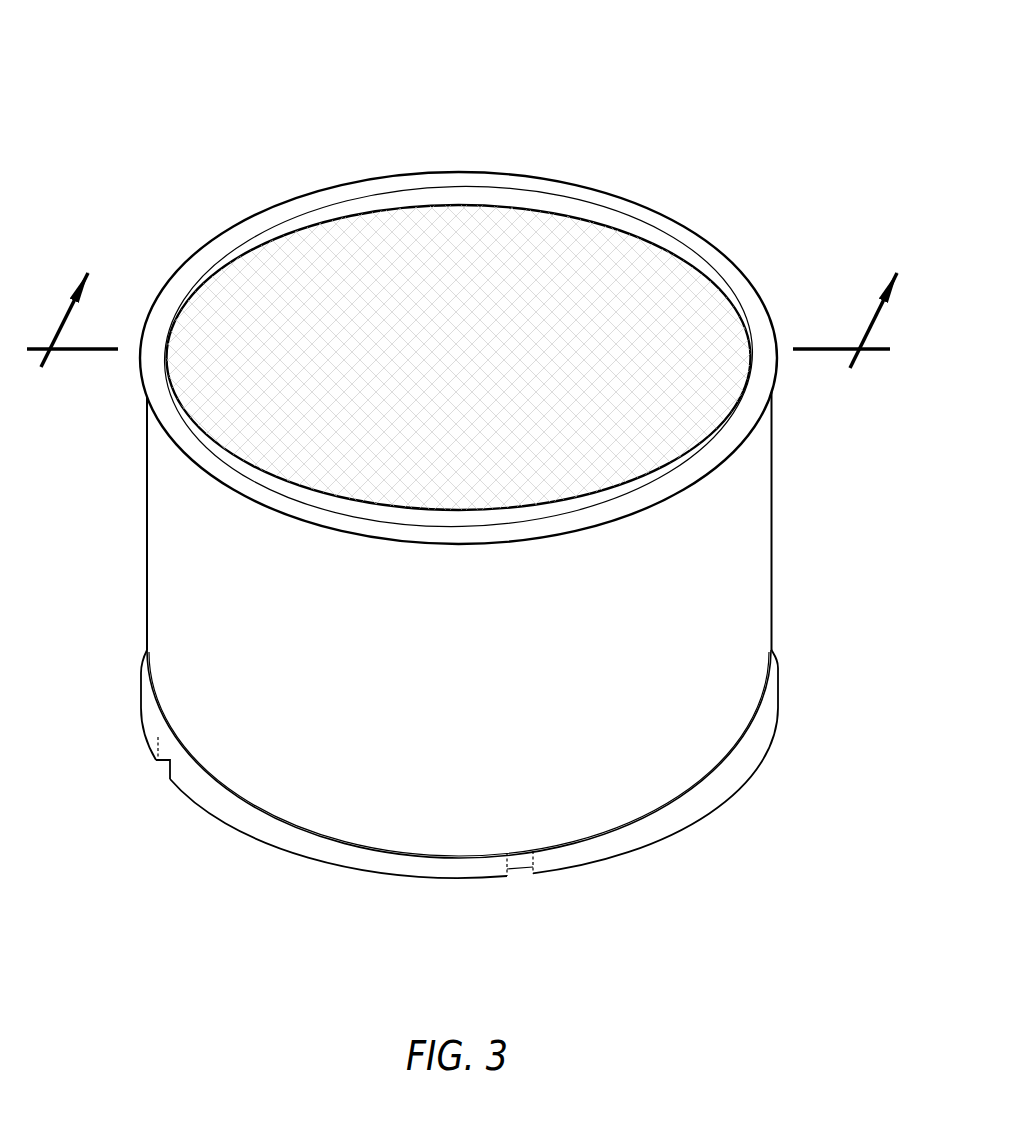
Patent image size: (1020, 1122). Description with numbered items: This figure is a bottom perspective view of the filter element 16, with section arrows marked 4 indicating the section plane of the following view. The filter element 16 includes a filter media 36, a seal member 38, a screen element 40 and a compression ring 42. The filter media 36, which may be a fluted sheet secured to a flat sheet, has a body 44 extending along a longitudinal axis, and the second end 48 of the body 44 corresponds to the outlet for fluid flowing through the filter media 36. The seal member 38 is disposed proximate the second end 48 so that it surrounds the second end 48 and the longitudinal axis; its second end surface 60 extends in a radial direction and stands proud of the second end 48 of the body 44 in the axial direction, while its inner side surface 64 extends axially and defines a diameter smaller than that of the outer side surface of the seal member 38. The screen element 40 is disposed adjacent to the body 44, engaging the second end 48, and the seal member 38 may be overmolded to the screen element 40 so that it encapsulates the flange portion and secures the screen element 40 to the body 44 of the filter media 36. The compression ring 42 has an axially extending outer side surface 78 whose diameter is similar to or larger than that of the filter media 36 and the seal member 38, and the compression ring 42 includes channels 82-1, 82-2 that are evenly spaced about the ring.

The filter element 16 is at (157, 89).
The filter media 36 is at (787, 486).
The seal member 38 is at (391, 165).
The screen element 40 is at (471, 231).
The compression ring 42 is at (707, 822).
The body 44 is at (170, 592).
The second end 48 is at (545, 237).
The second end surface 60 is at (628, 210).
The inner side surface 64 is at (680, 256).
The outer side surface 78 is at (248, 820).
The channel 82-1 is at (524, 881).
The channel 82-2 is at (158, 769).
The section line 4- 4 is at (461, 341).